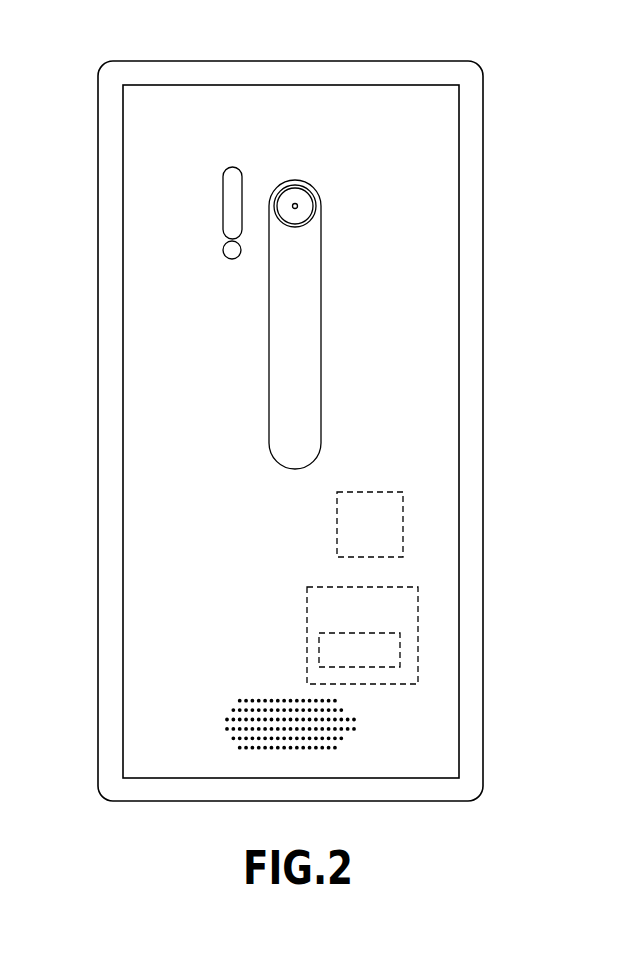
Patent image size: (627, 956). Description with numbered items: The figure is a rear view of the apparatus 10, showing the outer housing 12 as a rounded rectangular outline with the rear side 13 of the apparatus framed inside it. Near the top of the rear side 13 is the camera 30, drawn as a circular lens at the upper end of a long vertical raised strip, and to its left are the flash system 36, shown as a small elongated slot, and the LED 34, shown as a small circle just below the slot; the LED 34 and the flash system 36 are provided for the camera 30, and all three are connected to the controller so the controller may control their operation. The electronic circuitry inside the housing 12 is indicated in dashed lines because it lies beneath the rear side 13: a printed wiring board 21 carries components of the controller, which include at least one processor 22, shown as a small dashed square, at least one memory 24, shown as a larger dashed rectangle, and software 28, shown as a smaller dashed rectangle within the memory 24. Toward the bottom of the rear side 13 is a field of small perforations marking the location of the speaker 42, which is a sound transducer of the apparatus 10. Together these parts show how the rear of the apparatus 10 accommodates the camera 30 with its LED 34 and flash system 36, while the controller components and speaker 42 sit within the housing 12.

The apparatus 10 is at (526, 129).
The housing 12 is at (468, 320).
The rear side 13 is at (443, 413).
The printed wiring board 21 is at (435, 564).
The processor 22 is at (403, 512).
The memory 24 is at (418, 600).
The software 28 is at (395, 652).
The camera 30 is at (300, 205).
The LED 34 is at (222, 253).
The flash system 36 is at (230, 215).
The speaker 42 is at (325, 732).